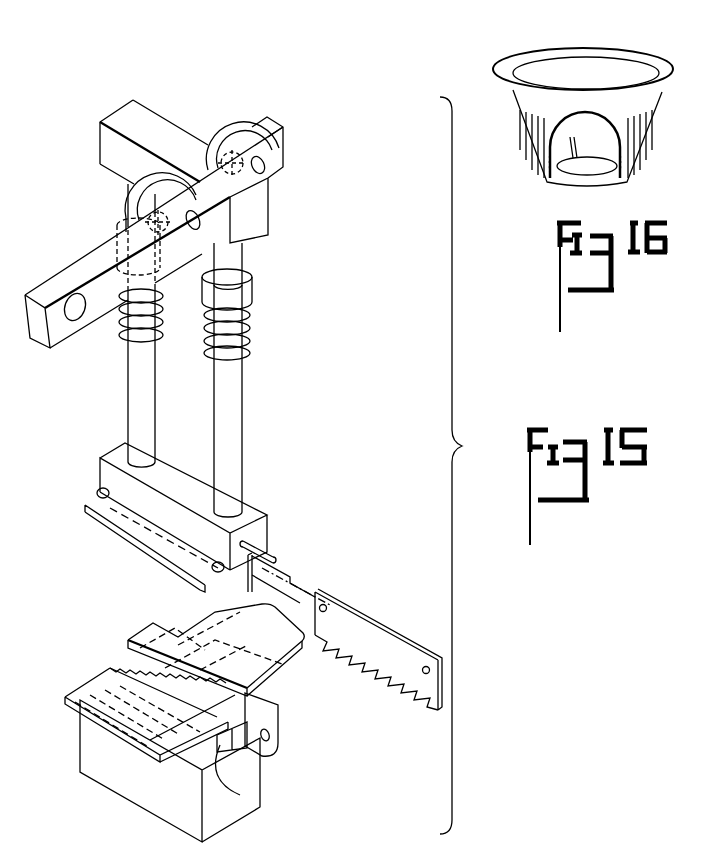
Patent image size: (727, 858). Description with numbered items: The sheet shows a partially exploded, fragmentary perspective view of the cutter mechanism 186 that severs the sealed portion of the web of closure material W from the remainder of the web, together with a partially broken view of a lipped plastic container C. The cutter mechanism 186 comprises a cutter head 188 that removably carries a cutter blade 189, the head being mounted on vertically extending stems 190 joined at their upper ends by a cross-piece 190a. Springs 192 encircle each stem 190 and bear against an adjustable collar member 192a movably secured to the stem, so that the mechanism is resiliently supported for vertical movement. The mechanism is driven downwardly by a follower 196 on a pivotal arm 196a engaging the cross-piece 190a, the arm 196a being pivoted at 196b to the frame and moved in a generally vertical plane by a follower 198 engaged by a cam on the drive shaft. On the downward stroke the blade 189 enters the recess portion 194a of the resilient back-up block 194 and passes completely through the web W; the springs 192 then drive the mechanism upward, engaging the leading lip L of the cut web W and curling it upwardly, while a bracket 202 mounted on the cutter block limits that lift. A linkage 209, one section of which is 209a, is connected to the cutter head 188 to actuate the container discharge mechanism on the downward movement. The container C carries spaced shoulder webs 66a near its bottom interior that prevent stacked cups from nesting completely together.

In FIG. 15, the cutter mechanism 186 is at (265, 343).
In FIG. 15, the cutter head 188 is at (262, 550).
In FIG. 15, the cutter blade 189 is at (368, 618).
In FIG. 15, the stems 190 is at (128, 417).
In FIG. 15, the cross-piece 190a is at (170, 118).
In FIG. 15, the springs 192 is at (163, 285).
In FIG. 15, the adjustable collar member 192a is at (110, 237).
In FIG. 15, the back-up block 194 is at (235, 745).
In FIG. 15, the recess portion 194a is at (240, 795).
In FIG. 15, the follower 196 is at (237, 122).
In FIG. 15, the pivotal arm 196a is at (273, 148).
In FIG. 15, the pivot 196b is at (77, 321).
In FIG. 15, the follower 198 is at (150, 173).
In FIG. 15, the bracket 202 is at (140, 635).
In FIG. 15, the linkage 209 is at (273, 560).
In FIG. 15, the linkage section 209a is at (253, 557).
In FIG. 15, the leading lip L is at (225, 760).
In FIG. 15, the web of closure material W is at (65, 697).
In FIG. 16, the container C is at (654, 112).
In FIG. 16, the shoulder webs 66a is at (577, 137).